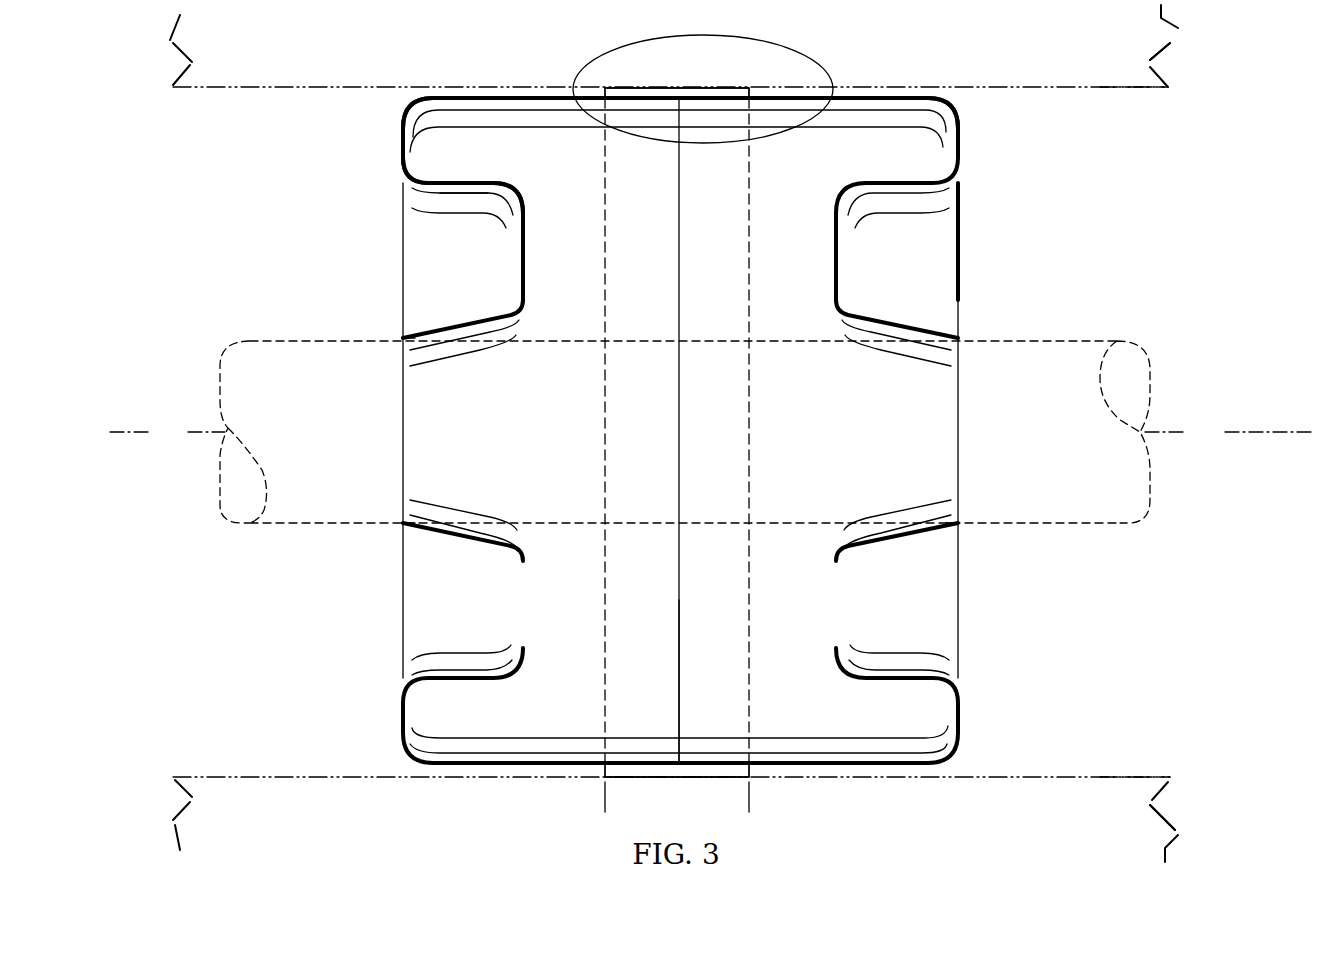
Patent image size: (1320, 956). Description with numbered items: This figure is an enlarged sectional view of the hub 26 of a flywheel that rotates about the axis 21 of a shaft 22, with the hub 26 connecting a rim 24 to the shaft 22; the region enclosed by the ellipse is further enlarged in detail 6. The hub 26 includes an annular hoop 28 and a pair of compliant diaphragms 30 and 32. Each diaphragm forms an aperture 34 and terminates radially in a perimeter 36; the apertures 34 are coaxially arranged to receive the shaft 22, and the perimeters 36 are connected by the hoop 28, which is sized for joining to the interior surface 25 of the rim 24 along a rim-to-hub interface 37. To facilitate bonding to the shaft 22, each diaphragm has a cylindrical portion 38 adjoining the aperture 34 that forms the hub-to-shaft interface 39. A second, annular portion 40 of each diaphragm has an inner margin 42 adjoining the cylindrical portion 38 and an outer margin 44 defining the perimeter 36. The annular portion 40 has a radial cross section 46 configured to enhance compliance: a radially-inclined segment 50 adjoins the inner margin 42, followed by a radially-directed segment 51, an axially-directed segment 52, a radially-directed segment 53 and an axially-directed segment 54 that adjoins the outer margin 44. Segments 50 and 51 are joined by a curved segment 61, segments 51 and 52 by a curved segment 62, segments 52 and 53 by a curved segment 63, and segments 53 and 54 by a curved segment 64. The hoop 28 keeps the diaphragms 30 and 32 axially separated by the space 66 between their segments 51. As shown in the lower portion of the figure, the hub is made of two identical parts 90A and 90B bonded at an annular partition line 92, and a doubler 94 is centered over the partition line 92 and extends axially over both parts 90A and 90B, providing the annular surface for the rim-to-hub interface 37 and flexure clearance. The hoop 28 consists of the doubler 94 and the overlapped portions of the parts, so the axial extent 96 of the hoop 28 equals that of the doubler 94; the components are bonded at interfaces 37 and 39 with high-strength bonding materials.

The detail view 6 is at (660, 145).
The axis 21 is at (712, 432).
The shaft 22 is at (1085, 523).
The rim 24 is at (1174, 48).
The interior surface 25 is at (1142, 88).
The hub 26 is at (965, 276).
The annular hoop 28 is at (670, 88).
The compliant diaphragm 30 is at (438, 535).
The compliant diaphragm 32 is at (922, 537).
The aperture 34 is at (405, 523).
The perimeter 36 is at (605, 90).
The rim-to-hub interface 37 is at (755, 775).
The cylindrical portion 38 is at (413, 335).
The hub-to-shaft interface 39 is at (405, 338).
The annular portion 40 is at (965, 140).
The inner margin 42 is at (945, 330).
The outer margin 44 is at (755, 90).
The radial cross section 46 is at (418, 187).
The radially-inclined segment 50 is at (478, 322).
The radially-directed segment 51 is at (520, 232).
The axially-directed segment 52 is at (463, 178).
The radially-directed segment 53 is at (403, 143).
The axially-directed segment 54 is at (525, 97).
The curved segment 61 is at (523, 292).
The curved segment 62 is at (513, 185).
The curved segment 63 is at (410, 175).
The curved segment 64 is at (413, 100).
The space 66 is at (832, 230).
The hub part 90A is at (537, 763).
The hub part 90B is at (813, 763).
The annular partition line 92 is at (679, 682).
The doubler 94 is at (712, 778).
The axial extent 96 is at (745, 803).